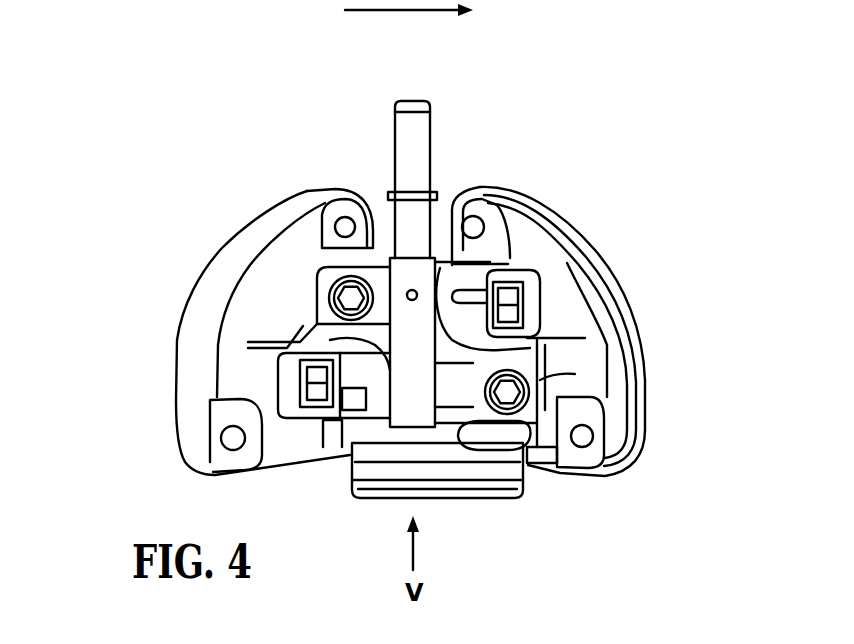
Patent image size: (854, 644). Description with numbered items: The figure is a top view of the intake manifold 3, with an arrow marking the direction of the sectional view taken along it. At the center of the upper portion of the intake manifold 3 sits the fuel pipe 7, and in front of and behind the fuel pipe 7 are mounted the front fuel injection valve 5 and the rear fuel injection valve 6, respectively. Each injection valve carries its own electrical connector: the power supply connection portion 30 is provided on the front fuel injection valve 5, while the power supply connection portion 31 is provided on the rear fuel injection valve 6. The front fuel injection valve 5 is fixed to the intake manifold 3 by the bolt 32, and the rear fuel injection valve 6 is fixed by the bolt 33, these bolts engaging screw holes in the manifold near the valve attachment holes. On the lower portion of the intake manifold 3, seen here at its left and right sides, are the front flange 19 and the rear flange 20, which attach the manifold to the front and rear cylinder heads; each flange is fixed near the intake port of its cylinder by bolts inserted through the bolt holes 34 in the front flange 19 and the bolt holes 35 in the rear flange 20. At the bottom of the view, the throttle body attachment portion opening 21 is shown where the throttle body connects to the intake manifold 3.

The intake manifold 3 is at (155, 130).
The front fuel injection valve 5 is at (490, 247).
The rear fuel injection valve 6 is at (335, 345).
The fuel pipe 7 is at (415, 137).
The front flange 19 is at (600, 303).
The rear flange 20 is at (210, 297).
The throttle body attachment portion opening 21 is at (474, 509).
The power supply connection portion 30 is at (540, 293).
The power supply connection portion 31 is at (273, 380).
The bolt 32 is at (345, 293).
The bolt 33 is at (537, 367).
The bolt hole 34 is at (473, 222).
The bolt hole 35 is at (345, 224).